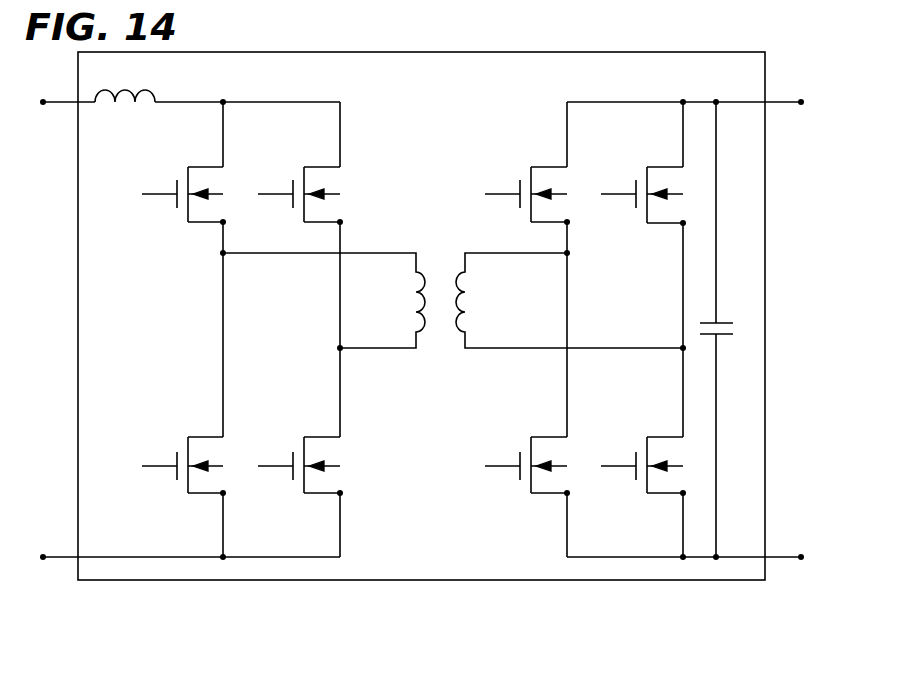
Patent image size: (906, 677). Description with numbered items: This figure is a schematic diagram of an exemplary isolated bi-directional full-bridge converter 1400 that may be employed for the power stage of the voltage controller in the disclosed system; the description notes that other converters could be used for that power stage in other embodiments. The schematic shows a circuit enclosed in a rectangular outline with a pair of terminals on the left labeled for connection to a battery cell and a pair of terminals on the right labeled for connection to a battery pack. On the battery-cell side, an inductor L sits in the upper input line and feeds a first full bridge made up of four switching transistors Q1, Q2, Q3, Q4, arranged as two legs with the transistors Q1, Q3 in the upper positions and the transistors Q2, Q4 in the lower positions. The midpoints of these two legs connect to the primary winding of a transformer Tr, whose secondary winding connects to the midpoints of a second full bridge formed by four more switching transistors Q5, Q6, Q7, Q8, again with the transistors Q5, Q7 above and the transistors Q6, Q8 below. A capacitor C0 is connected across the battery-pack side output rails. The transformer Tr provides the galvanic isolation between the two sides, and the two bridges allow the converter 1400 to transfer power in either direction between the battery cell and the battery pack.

The isolated bi-directional full-bridge converter 1400 is at (422, 356).
The inductor L is at (125, 112).
The transistor switch Q1 is at (179, 192).
The transistor switch Q2 is at (178, 464).
The transistor switch Q3 is at (296, 192).
The transistor switch Q4 is at (295, 464).
The transistor switch Q5 is at (523, 192).
The transistor switch Q6 is at (522, 464).
The transistor switch Q7 is at (640, 192).
The transistor switch Q8 is at (640, 464).
The transformer Tr is at (453, 288).
The output capacitor C0 is at (723, 329).